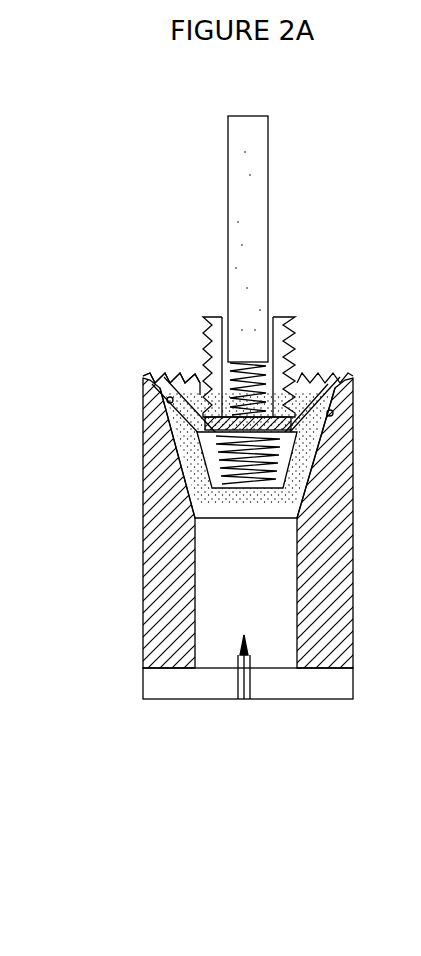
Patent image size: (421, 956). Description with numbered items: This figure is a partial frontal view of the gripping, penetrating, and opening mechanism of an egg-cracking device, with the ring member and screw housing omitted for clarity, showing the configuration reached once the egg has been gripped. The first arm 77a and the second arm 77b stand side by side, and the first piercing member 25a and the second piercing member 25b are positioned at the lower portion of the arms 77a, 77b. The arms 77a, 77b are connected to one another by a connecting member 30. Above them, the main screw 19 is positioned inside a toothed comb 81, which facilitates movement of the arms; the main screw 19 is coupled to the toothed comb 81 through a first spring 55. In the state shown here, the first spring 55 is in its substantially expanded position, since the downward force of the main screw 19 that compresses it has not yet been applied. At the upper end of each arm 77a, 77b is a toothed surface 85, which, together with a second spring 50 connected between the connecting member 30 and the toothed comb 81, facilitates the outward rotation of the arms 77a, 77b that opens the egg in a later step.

The main screw 19 is at (268, 207).
The toothed comb 81 is at (273, 313).
The first spring 55 is at (278, 370).
The toothed surface 85 is at (172, 376).
The connecting member 30 is at (338, 464).
The second spring 50 is at (254, 480).
The first arm 77a is at (143, 527).
The second arm 77b is at (352, 520).
The first piercing member 25a is at (240, 683).
The second piercing member 25b is at (250, 683).